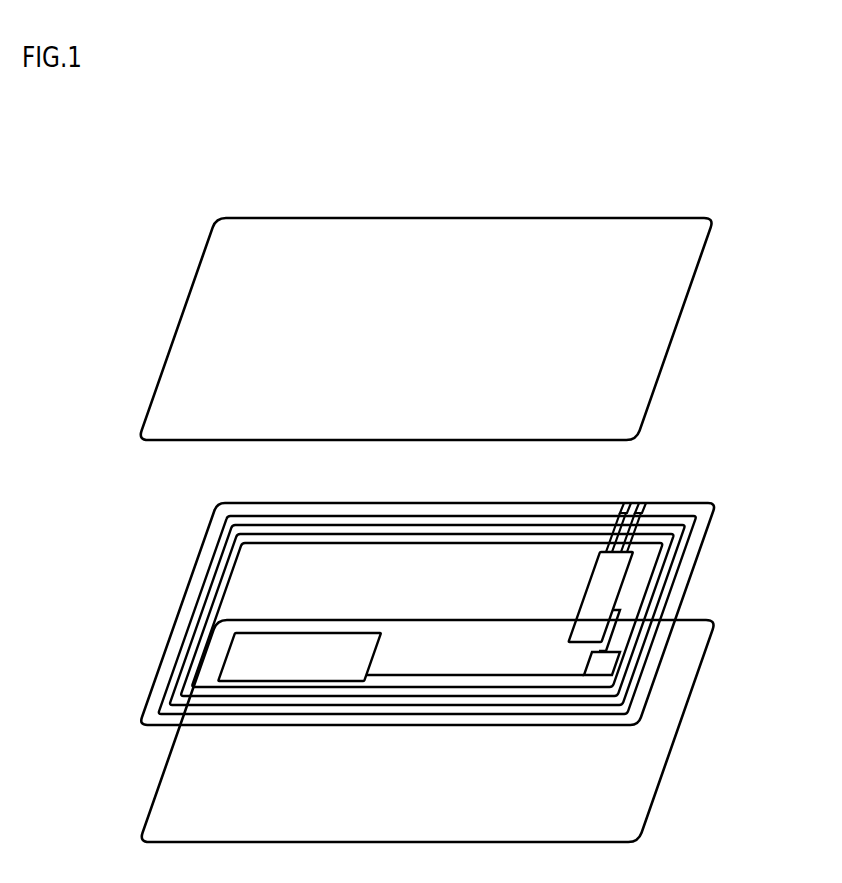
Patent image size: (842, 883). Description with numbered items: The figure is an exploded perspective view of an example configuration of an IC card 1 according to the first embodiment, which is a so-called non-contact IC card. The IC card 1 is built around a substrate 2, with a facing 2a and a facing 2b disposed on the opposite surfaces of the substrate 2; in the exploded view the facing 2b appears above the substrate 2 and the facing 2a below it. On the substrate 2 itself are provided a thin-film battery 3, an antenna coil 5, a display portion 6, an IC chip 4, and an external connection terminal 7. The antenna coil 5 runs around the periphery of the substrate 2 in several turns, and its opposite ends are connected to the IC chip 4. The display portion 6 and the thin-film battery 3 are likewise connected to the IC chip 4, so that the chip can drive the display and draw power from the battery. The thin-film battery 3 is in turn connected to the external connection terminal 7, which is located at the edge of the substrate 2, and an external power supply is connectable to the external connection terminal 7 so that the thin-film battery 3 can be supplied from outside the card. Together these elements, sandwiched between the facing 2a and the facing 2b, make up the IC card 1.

The IC card 1 is at (505, 197).
The substrate 2 is at (702, 547).
The facing 2a is at (678, 728).
The facing 2b is at (678, 325).
The thin-film battery 3 is at (618, 594).
The IC chip 4 is at (592, 662).
The antenna coil 5 is at (166, 690).
The display portion 6 is at (229, 648).
The external connection terminal 7 is at (643, 503).